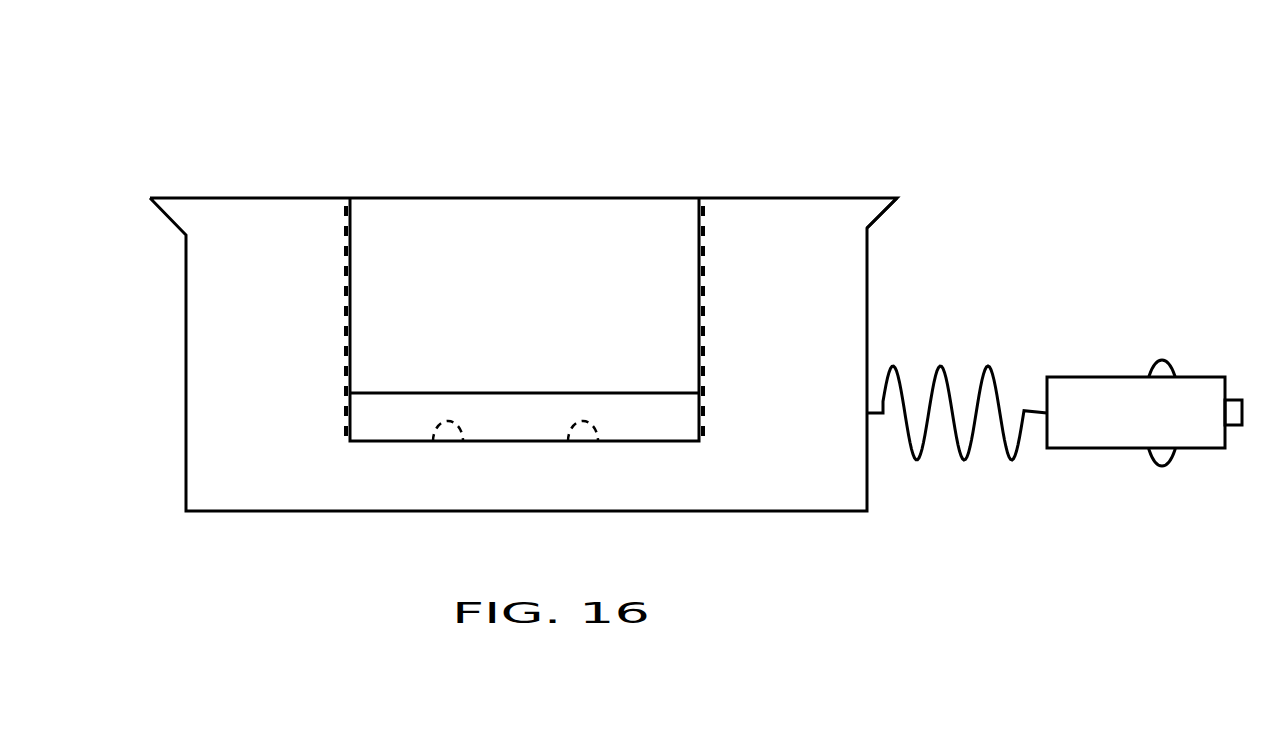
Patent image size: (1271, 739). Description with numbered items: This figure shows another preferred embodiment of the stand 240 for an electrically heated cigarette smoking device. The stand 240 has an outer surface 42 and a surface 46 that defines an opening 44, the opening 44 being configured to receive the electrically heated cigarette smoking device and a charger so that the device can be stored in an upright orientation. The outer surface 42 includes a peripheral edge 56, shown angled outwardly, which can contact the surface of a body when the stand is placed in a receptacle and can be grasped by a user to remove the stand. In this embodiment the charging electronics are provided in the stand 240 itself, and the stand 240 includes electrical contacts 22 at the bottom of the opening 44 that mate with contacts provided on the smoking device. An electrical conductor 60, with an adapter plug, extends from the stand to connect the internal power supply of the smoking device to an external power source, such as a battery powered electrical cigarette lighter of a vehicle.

The stand 240 is at (895, 98).
The outer surface 42 is at (186, 407).
The opening 44 is at (593, 222).
The surface 46 is at (704, 267).
The peripheral edge 56 is at (884, 211).
The electrical contacts 22 is at (447, 434).
The electrical conductor 60 is at (1068, 349).